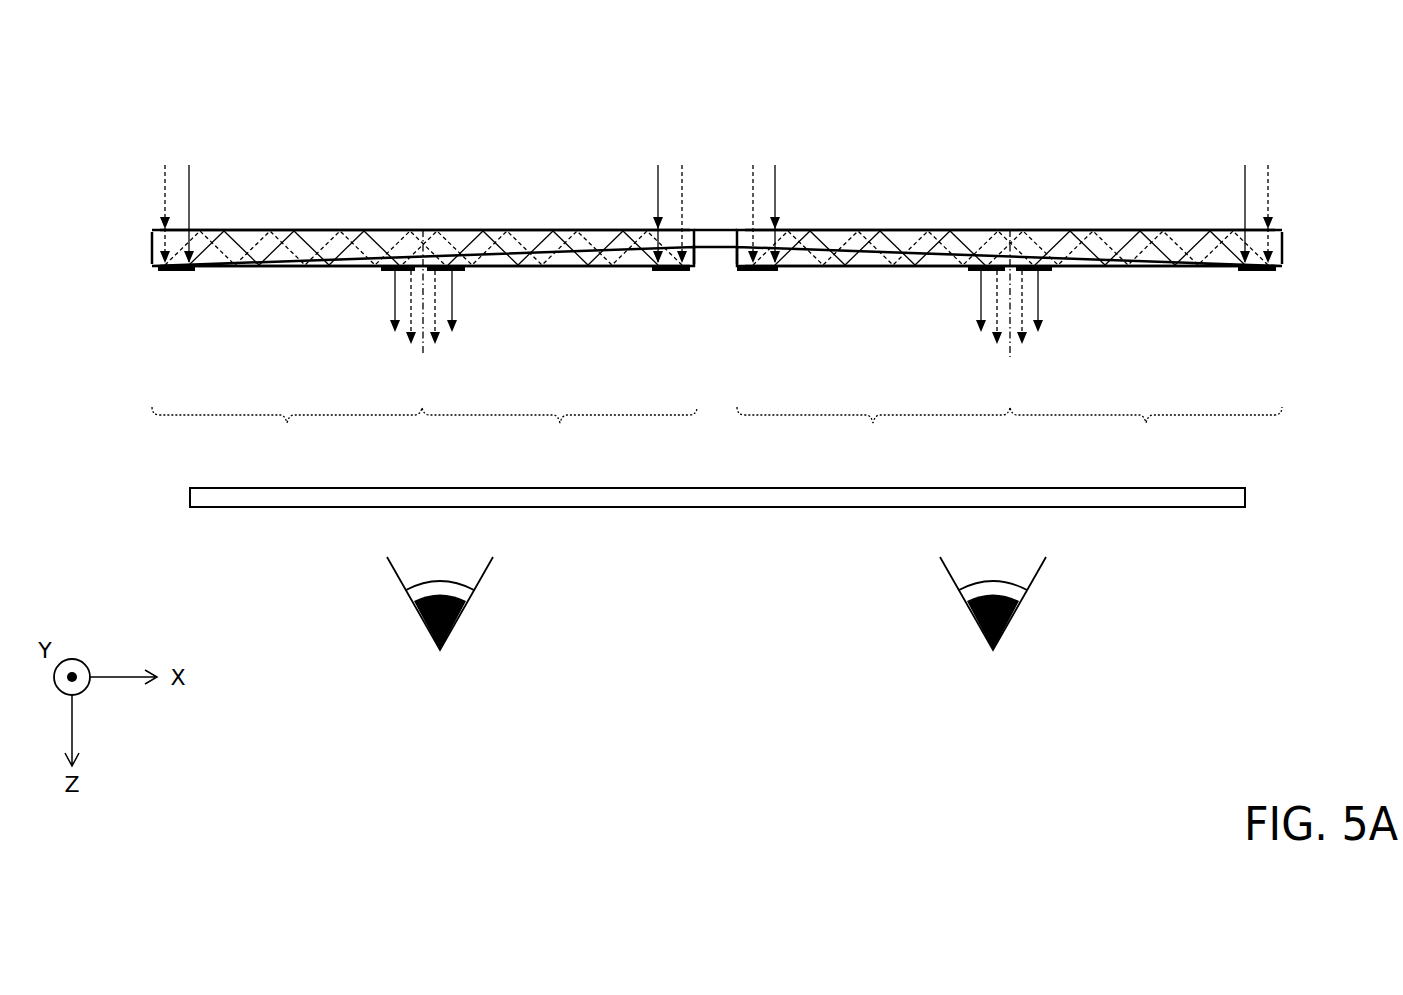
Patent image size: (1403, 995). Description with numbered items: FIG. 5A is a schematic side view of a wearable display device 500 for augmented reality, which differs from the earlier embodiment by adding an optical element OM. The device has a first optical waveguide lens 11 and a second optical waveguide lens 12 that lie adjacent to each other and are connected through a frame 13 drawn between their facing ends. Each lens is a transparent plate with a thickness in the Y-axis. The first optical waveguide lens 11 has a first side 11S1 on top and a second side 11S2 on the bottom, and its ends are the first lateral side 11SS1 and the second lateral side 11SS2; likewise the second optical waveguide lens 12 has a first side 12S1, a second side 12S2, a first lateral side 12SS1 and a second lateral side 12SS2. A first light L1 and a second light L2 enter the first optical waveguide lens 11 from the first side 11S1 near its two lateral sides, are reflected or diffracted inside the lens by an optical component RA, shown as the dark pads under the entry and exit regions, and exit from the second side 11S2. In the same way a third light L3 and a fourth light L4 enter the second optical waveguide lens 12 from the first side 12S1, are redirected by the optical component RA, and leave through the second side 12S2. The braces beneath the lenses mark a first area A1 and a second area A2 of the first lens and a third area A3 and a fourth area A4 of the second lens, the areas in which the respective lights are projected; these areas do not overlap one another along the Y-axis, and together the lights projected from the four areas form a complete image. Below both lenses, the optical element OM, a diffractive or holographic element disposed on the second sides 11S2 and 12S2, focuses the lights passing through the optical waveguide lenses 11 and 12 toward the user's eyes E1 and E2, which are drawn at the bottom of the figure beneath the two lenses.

The wearable display device 500 is at (90, 90).
The first optical waveguide lens 11 is at (526, 272).
The second optical waveguide lens 12 is at (881, 272).
The frame 13 is at (713, 238).
The first side 11S1 is at (325, 229).
The second side 11S2 is at (288, 268).
The first lateral side 11SS1 is at (150, 250).
The second lateral side 11SS2 is at (694, 262).
The first side 12S1 is at (1010, 195).
The second side 12S2 is at (1147, 268).
The first lateral side 12SS1 is at (737, 262).
The second lateral side 12SS2 is at (1283, 250).
The first light L1 is at (299, 201).
The second light L2 is at (544, 201).
The third light L3 is at (890, 201).
The fourth light L4 is at (1135, 201).
The optical component RA is at (180, 272).
The first area A1 is at (287, 431).
The second area A2 is at (559, 431).
The third area A3 is at (873, 431).
The fourth area A4 is at (1146, 431).
The optical element OM is at (190, 497).
The eye E1 is at (440, 619).
The eye E2 is at (993, 619).